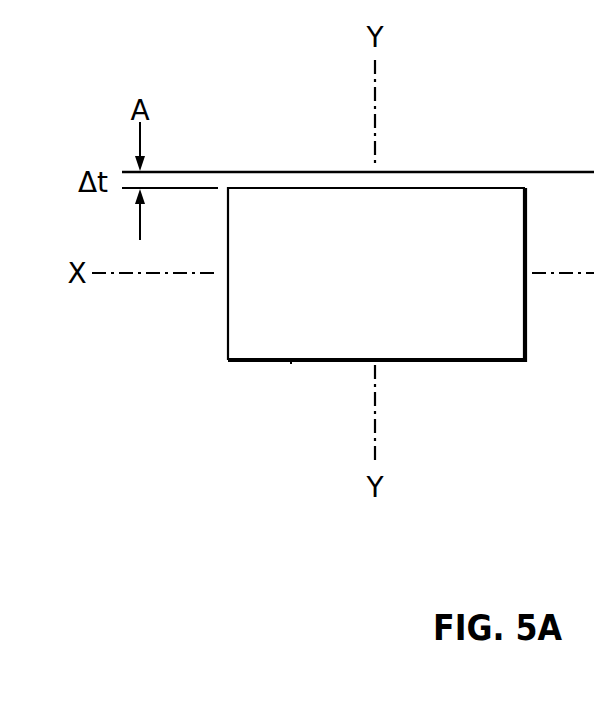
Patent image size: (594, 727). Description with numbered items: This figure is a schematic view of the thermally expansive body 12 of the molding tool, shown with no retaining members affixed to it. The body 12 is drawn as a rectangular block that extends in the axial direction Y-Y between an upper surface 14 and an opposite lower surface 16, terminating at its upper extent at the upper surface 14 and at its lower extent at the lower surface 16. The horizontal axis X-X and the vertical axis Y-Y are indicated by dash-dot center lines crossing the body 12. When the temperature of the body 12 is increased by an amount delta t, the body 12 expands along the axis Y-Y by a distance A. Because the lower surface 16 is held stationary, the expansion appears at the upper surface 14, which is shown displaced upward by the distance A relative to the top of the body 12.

The body 12 is at (250, 318).
The upper surface 14 is at (452, 188).
The lower surface 16 is at (290, 362).